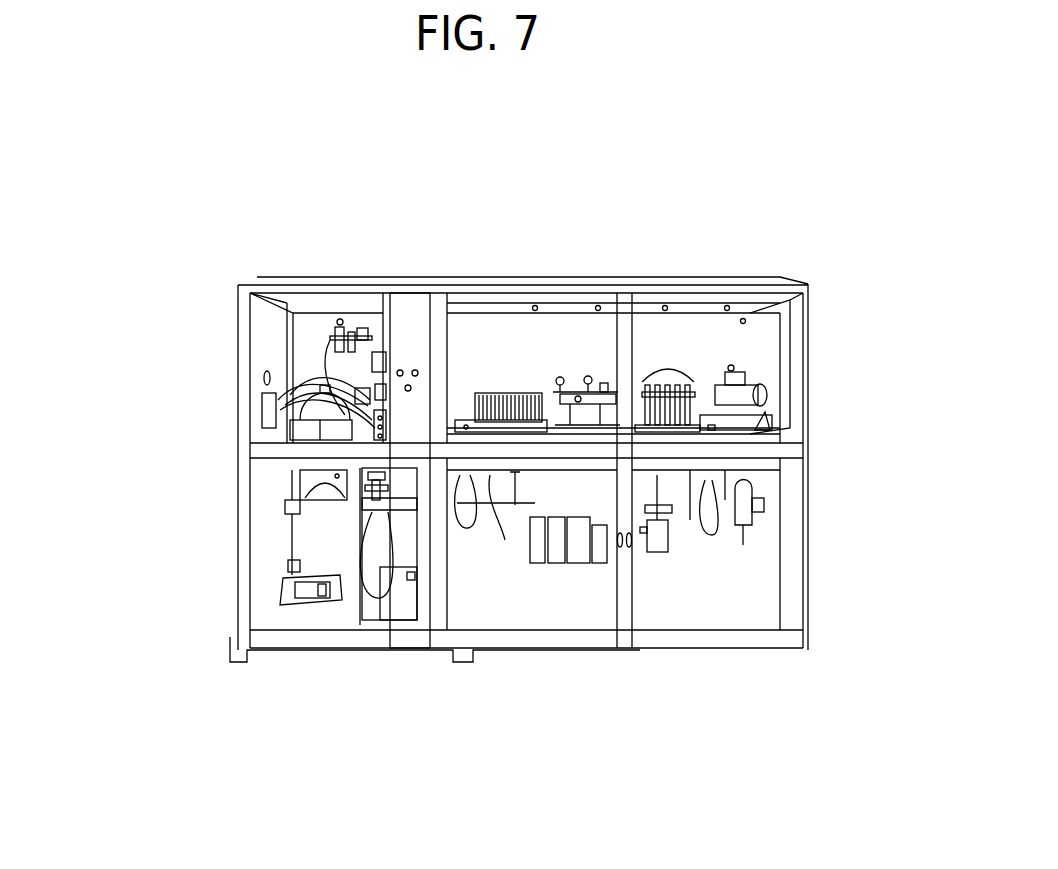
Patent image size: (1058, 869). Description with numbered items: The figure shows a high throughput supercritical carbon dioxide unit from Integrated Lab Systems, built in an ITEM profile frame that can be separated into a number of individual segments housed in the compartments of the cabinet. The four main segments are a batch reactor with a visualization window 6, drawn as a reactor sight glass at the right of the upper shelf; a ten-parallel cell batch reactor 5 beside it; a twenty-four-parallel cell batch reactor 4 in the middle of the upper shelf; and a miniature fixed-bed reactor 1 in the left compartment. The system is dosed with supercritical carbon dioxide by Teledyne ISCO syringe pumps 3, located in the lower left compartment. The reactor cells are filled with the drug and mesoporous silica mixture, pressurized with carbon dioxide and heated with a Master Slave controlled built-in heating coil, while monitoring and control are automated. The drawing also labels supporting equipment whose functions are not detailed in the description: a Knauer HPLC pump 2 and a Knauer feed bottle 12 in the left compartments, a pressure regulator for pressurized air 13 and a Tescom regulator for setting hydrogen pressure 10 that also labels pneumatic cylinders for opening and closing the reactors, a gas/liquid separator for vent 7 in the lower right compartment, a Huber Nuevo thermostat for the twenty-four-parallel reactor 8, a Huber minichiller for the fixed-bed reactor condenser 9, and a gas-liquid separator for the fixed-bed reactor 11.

The miniature fixed-bed reactor 1 is at (258, 384).
The Knauer HPLC Pump 2 is at (286, 404).
The Teledyne ISCO syringe pumps 3 is at (340, 489).
The 24-parallel cell batch reactor 4 is at (510, 422).
The 10-parallel cell batch reactor 5 is at (648, 373).
The batch reactor with a visualization window 6 is at (782, 411).
The G/L Separator for Vent 7 is at (750, 508).
The Huber Nuevo Thermostat for R20 8 is at (528, 554).
The Huber Minichiller for Condenser for R10 9 is at (392, 605).
The Tescom for Setting H2 Pressure / Pneumatic Cylinders for Opening/Closing Reactor 10 is at (673, 607).
The R10 Gas-Liquid Separator 11 is at (372, 510).
The Knauer Feed Bottle 12 is at (343, 484).
The Pressure Regulator for Pressurized Air 13 is at (334, 325).